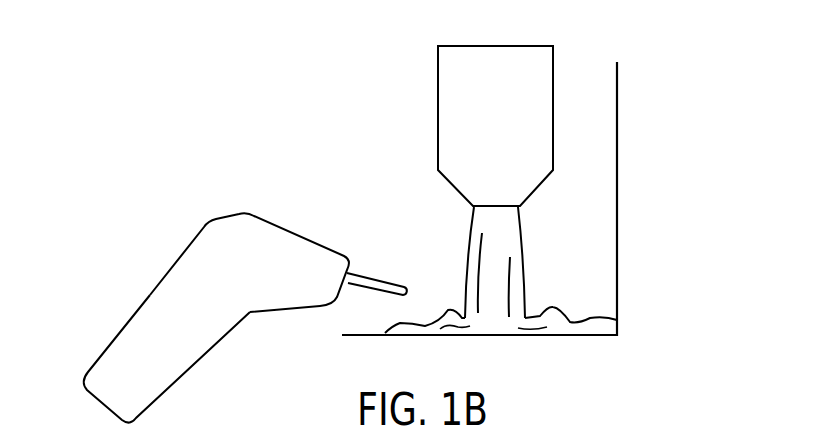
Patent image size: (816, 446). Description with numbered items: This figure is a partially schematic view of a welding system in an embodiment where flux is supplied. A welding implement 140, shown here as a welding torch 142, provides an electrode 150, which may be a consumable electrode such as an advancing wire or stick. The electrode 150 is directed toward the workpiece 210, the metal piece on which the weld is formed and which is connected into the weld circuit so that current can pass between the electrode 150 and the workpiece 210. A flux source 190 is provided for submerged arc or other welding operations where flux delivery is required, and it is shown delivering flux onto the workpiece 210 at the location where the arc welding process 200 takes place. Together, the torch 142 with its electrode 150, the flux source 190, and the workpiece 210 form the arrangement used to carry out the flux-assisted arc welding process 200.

The welding implement 140 is at (216, 313).
The welding torch 142 is at (185, 350).
The electrode 150 is at (382, 270).
The flux source 190 is at (422, 127).
The arc welding process 200 is at (533, 258).
The workpiece 210 is at (632, 217).